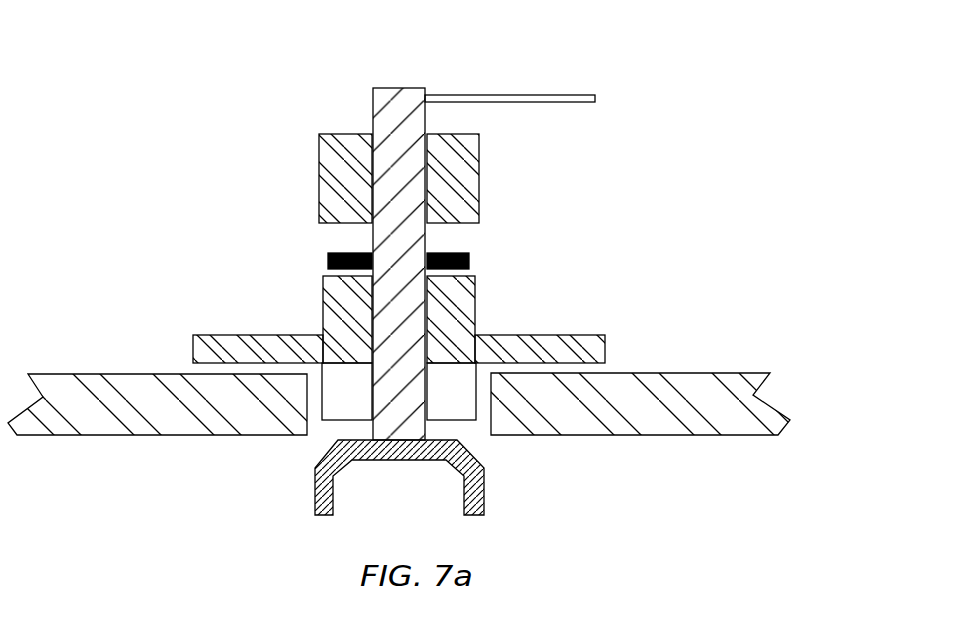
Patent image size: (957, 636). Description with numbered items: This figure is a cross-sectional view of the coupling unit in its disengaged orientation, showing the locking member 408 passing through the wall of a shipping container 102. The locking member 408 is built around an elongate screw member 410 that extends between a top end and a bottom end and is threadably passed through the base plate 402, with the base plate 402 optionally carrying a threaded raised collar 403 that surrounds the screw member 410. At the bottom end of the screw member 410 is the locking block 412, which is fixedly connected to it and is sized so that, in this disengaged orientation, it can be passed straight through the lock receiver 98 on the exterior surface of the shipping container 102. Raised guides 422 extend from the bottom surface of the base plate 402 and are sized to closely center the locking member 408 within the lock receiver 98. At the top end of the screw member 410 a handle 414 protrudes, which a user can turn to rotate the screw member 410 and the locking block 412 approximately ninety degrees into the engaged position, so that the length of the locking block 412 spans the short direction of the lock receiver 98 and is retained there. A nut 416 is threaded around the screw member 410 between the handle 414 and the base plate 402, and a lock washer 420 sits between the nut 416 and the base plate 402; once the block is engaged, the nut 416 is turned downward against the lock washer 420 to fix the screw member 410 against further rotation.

The lock receiver 98 is at (313, 455).
The shipping container 102 is at (176, 435).
The base plate 402 is at (595, 335).
The threaded raised collar 403 is at (475, 307).
The locking member 408 is at (404, 52).
The screw member 410 is at (373, 117).
The locking block 412 is at (484, 493).
The handle 414 is at (548, 97).
The nut 416 is at (479, 176).
The lock washer 420 is at (469, 262).
The raised guides 422 is at (353, 392).